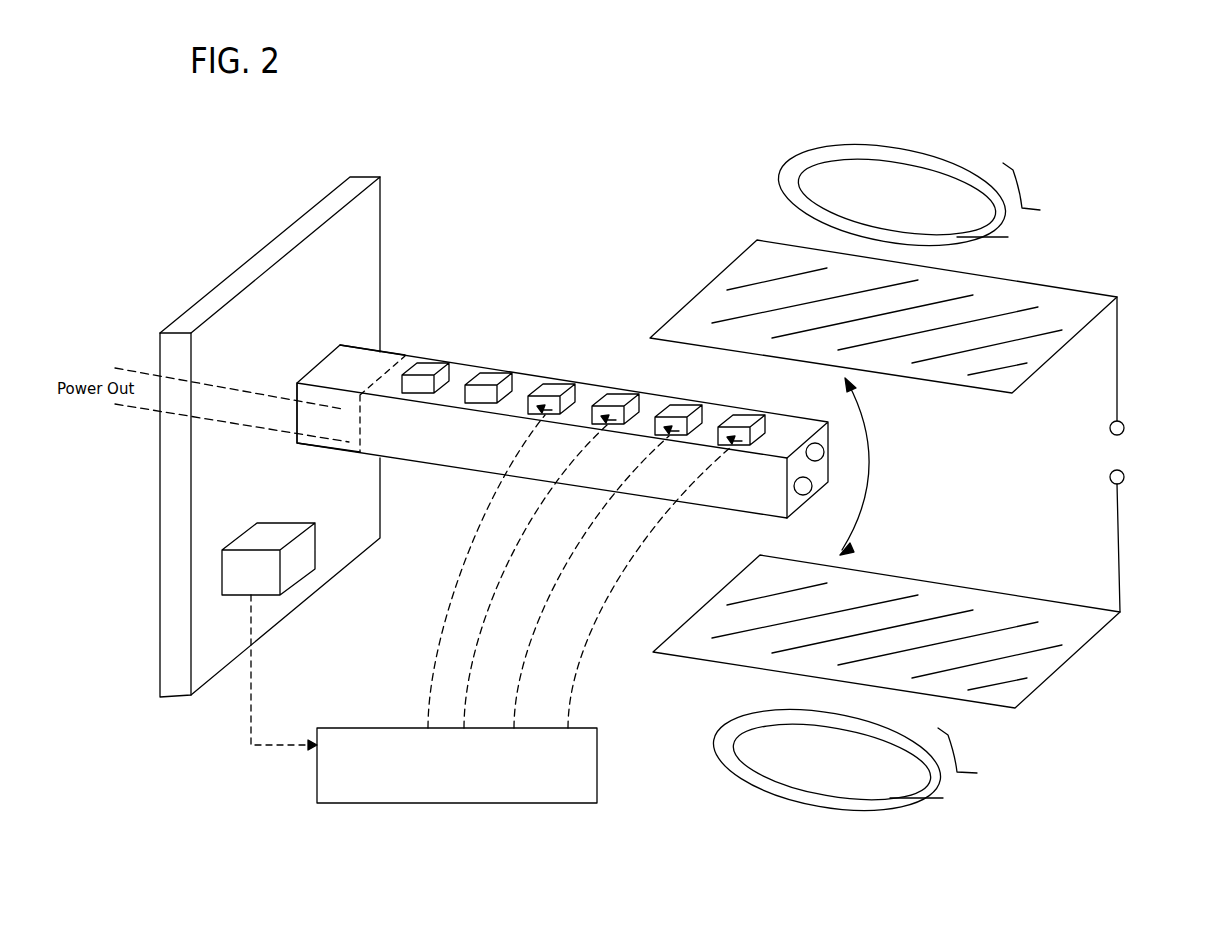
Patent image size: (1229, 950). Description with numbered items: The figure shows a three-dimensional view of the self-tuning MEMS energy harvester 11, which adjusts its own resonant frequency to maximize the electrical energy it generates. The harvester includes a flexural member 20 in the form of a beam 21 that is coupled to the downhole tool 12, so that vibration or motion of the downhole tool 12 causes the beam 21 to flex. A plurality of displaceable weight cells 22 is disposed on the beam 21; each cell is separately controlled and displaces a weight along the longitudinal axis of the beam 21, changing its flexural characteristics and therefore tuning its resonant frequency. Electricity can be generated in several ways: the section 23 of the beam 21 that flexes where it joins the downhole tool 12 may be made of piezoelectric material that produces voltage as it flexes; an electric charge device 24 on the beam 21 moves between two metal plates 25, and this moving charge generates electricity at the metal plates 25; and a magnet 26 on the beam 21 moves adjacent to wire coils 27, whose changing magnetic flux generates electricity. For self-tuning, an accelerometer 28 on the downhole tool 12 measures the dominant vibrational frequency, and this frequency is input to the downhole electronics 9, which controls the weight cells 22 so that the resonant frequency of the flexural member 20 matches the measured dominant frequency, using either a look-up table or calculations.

The downhole electronics 9 is at (524, 609).
The MEMS energy harvester 11 is at (427, 155).
The downhole tool 12 is at (350, 187).
The flexural member 20 is at (562, 436).
The beam 21 is at (465, 471).
The displaceable weight cells 22 is at (617, 405).
The section of the beam 23 is at (370, 362).
The electric charge device 24 is at (818, 441).
The metal plates 25 is at (718, 273).
The magnet 26 is at (812, 494).
The wire coils 27 is at (777, 185).
The accelerometer 28 is at (269, 636).